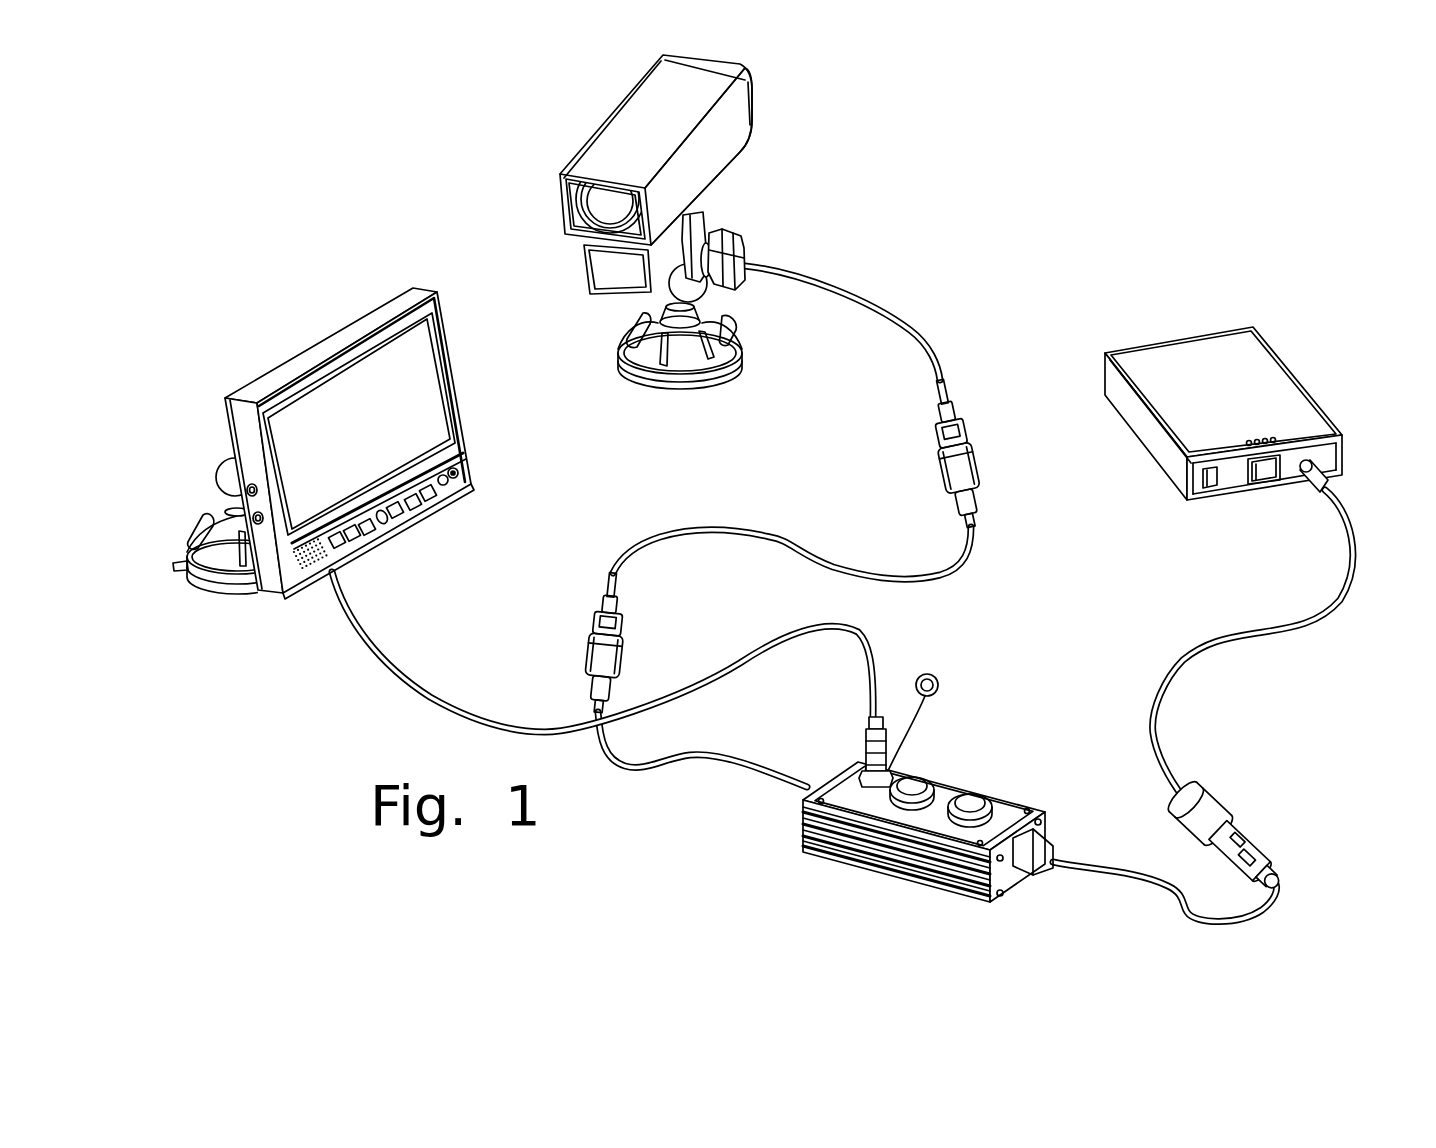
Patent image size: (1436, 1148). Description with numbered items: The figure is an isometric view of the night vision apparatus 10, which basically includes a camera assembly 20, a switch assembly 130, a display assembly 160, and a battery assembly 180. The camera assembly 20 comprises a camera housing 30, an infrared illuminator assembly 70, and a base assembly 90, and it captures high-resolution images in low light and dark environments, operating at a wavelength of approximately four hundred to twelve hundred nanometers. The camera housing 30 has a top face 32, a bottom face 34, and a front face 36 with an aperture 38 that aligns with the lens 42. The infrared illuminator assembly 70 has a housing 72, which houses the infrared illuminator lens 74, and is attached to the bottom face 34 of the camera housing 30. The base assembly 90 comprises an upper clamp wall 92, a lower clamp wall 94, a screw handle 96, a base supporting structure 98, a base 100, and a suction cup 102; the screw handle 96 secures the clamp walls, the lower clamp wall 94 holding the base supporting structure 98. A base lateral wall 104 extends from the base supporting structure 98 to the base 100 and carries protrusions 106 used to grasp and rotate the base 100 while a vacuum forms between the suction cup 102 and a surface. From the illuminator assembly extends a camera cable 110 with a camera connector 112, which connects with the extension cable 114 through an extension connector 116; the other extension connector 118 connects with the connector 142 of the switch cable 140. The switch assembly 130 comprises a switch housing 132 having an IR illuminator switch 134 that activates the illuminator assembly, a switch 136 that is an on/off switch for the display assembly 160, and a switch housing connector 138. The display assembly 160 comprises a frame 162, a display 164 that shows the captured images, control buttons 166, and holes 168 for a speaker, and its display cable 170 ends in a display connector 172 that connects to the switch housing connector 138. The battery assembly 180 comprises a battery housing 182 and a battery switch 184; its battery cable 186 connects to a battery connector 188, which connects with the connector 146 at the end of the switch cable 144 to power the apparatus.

The night vision apparatus 10 is at (1090, 170).
The camera assembly 20 is at (796, 86).
The camera housing 30 is at (572, 116).
The top face 32 is at (643, 107).
The bottom face 34 is at (752, 146).
The front face 36 is at (582, 226).
The aperture 38 is at (590, 212).
The lens 42 is at (605, 204).
The infrared illuminator assembly 70 is at (598, 322).
The housing 72 is at (697, 208).
The infrared illuminator lens 74 is at (608, 277).
The base assembly 90 is at (678, 428).
The upper clamp wall 92 is at (700, 226).
The lower clamp wall 94 is at (704, 284).
The screw handle 96 is at (737, 252).
The base supporting structure 98 is at (680, 303).
The base 100 is at (733, 364).
The suction cup 102 is at (708, 388).
The base lateral wall 104 is at (725, 340).
The protrusions 106 is at (663, 354).
The camera cable 110 is at (912, 325).
The camera connector 112 is at (972, 432).
The extension cable 114 is at (938, 574).
The extension connector 116 is at (980, 478).
The extension connector 118 is at (624, 620).
The switch assembly 130 is at (895, 890).
The switch housing 132 is at (1022, 815).
The infrared (IR) illuminator switch 134 is at (972, 795).
The switch 136 is at (913, 777).
The switch housing connector 138 is at (816, 796).
The switch cable 140 is at (673, 768).
The connector 142 is at (590, 650).
The switch cable 144 is at (1158, 888).
The connector 146 is at (1272, 857).
The display assembly 160 is at (226, 280).
The frame 162 is at (276, 372).
The display 164 is at (386, 353).
The control buttons 166 is at (371, 547).
The holes 168 is at (305, 578).
The display cable 170 is at (392, 673).
The display connector 172 is at (855, 752).
The battery assembly 180 is at (1259, 280).
The battery housing 182 is at (1253, 367).
The battery switch 184 is at (1259, 478).
The battery cable 186 is at (1360, 567).
The battery connector 188 is at (1208, 800).